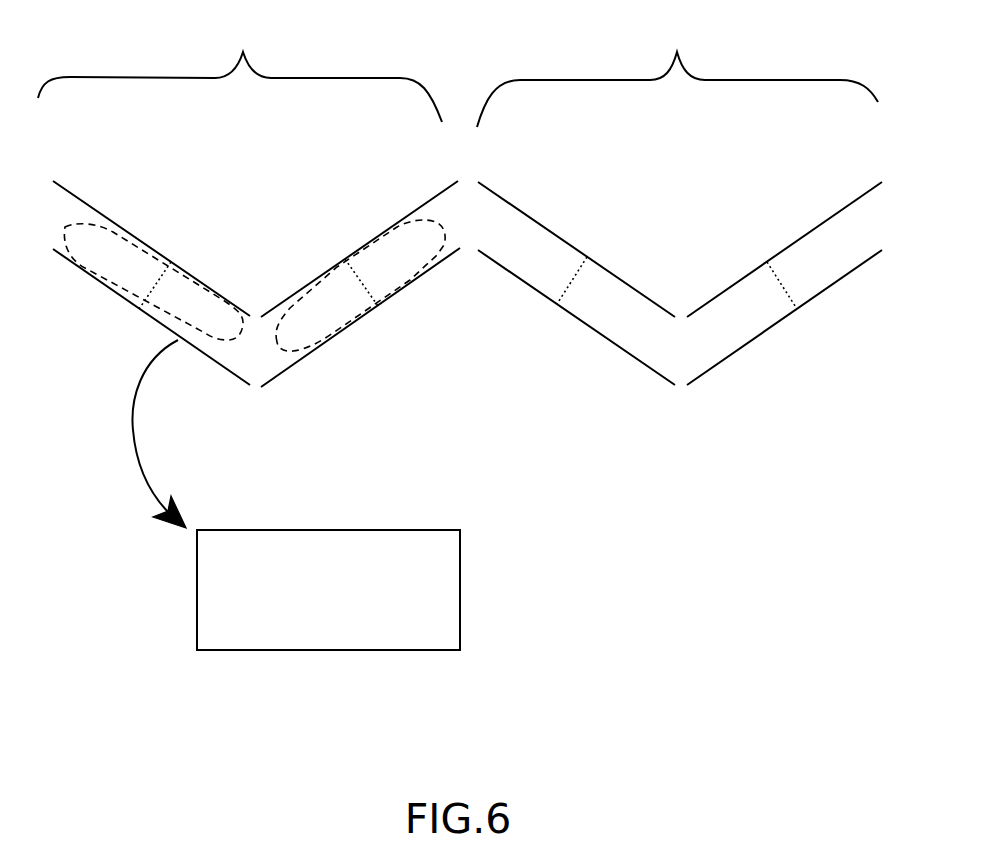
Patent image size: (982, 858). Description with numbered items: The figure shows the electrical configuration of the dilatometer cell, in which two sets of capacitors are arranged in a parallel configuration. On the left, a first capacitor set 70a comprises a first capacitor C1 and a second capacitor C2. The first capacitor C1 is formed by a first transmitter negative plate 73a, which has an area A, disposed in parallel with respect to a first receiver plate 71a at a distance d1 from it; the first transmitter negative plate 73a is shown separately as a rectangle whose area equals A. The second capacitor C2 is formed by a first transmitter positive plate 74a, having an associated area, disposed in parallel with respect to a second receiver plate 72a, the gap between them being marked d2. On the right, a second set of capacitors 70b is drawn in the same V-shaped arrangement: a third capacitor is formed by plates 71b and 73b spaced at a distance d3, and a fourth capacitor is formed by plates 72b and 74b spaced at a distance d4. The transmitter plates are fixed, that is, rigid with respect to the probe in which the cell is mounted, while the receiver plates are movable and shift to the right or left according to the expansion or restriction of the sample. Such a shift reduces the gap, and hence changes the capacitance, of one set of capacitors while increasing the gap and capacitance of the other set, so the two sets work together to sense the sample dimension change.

The first capacitor set 70a is at (240, 68).
The second set of capacitors 70b is at (677, 75).
The first receiver plate 71a is at (102, 216).
The second receiver plate 72a is at (278, 303).
The first transmitter negative plate 73a is at (215, 363).
The first transmitter positive plate 74a is at (298, 362).
The plate 71b is at (562, 238).
The plate 72b is at (807, 235).
The plate 73b is at (585, 323).
The plate 74b is at (772, 330).
The first capacitor C1 is at (82, 222).
The second capacitor C2 is at (423, 220).
The distance d1 is at (144, 282).
The second channel width d2 is at (352, 285).
The distance d3 is at (564, 279).
The distance d4 is at (772, 288).